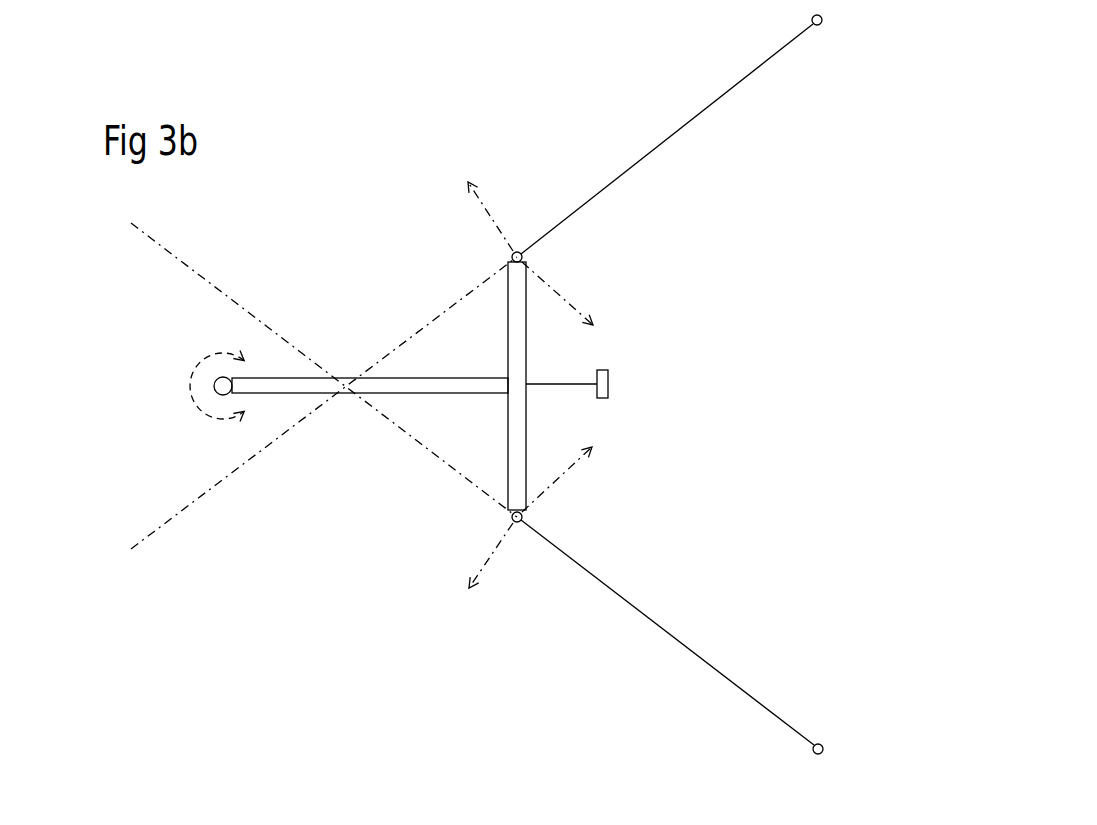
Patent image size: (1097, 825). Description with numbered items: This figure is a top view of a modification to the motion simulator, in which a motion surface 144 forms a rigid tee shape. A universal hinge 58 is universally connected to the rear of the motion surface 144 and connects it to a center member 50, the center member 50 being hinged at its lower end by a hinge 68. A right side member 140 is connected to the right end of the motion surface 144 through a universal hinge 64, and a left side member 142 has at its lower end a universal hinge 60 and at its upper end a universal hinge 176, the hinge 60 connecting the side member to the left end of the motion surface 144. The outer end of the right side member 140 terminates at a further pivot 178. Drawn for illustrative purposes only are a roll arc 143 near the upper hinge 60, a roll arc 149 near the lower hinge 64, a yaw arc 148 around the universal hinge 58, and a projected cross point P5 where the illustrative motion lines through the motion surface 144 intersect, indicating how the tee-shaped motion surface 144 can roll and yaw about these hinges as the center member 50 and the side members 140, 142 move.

The center member 50 is at (560, 390).
The universal hinge 58 is at (214, 391).
The universal hinge 60 is at (518, 251).
The universal hinge 64 is at (517, 522).
The hinge 68 is at (613, 385).
The right side member 140 is at (677, 627).
The left side member 142 is at (660, 160).
The roll arc 143 is at (553, 283).
The motion surface 144 is at (461, 347).
The yaw arc 148 is at (193, 365).
The roll arc 149 is at (552, 489).
The universal hinge 176 is at (817, 28).
The lower link end pivot 178 is at (826, 735).
The projected cross point P5 is at (343, 394).